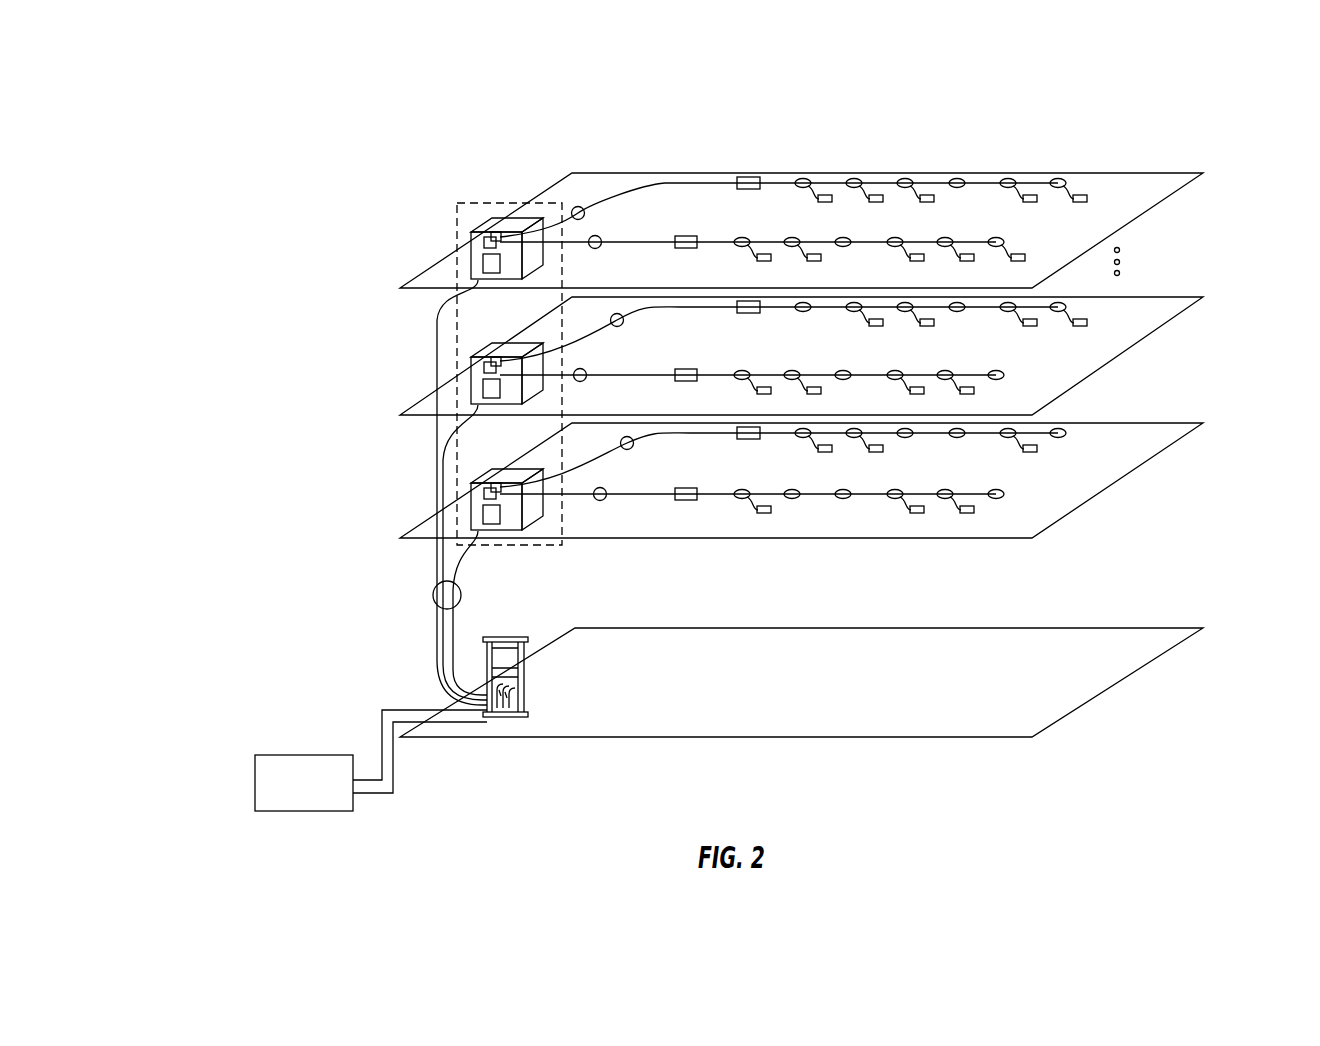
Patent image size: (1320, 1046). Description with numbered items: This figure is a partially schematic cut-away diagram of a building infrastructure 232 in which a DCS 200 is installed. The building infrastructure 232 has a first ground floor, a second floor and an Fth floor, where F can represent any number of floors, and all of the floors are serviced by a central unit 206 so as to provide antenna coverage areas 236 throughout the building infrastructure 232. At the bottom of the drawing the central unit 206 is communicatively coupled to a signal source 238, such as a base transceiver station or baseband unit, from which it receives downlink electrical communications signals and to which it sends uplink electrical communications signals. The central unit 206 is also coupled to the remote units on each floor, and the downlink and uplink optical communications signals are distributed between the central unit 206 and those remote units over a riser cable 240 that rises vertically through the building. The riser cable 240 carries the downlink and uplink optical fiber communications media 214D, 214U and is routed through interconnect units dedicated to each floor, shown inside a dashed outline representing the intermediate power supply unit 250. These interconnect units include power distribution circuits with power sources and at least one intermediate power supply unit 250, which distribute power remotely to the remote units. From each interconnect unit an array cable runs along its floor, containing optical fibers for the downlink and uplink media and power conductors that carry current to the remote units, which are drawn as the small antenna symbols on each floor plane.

The DCS 200 is at (732, 456).
The intermediate power supply unit 250 is at (437, 334).
The downlink optical fiber communications media 214D is at (440, 492).
The uplink optical fiber communications media 214U is at (440, 492).
The antenna coverage areas 236 is at (854, 420).
The building infrastructure 232 is at (404, 492).
The riser cable 240 is at (433, 598).
The central unit 206 is at (534, 683).
The signal source 238 is at (304, 783).